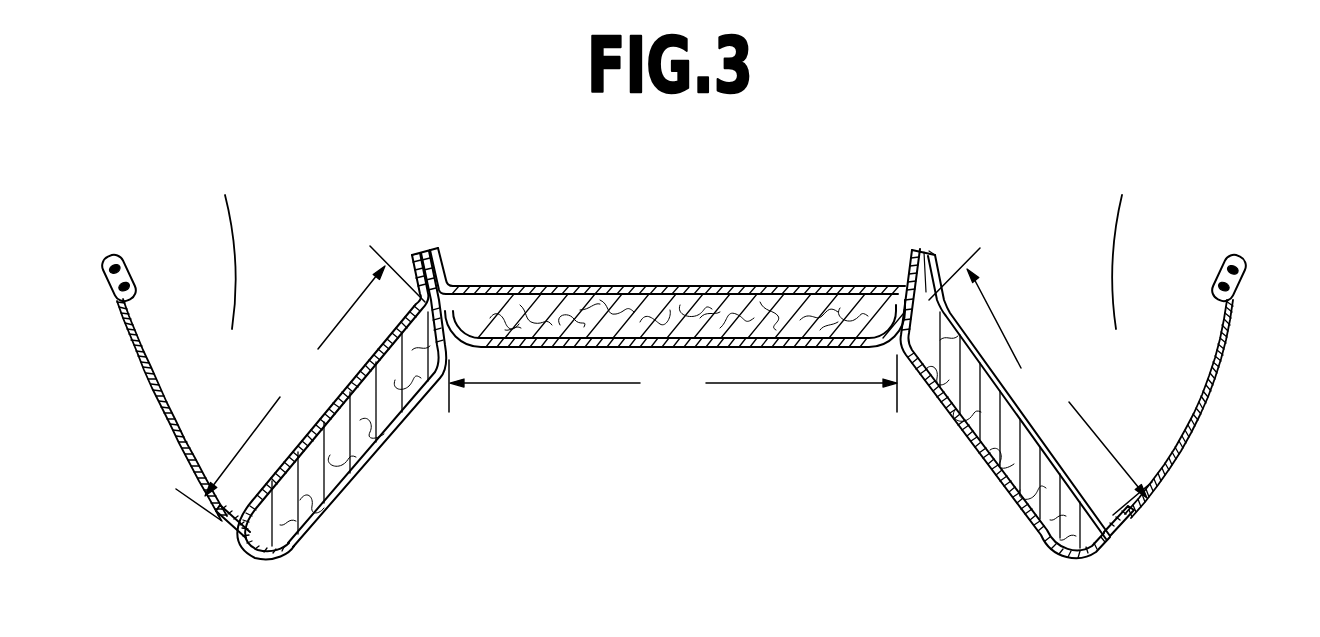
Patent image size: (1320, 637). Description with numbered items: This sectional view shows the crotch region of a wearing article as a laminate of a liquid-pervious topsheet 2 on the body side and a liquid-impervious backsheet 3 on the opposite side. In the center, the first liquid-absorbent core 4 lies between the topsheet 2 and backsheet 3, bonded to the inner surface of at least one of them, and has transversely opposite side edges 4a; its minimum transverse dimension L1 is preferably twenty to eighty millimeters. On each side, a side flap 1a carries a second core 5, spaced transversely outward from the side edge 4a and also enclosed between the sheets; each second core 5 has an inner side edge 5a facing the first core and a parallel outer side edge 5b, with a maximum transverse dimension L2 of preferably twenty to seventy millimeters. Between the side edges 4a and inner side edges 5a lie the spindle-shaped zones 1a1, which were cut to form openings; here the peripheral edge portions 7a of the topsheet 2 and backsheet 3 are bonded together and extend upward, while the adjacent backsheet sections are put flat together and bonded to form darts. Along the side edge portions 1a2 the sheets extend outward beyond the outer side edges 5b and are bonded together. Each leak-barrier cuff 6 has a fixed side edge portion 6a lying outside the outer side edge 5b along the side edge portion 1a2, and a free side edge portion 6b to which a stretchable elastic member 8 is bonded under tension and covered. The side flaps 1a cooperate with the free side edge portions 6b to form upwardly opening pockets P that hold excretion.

The topsheet 2 is at (980, 371).
The backsheet 3 is at (943, 419).
The first liquid-absorbent core 4 is at (727, 303).
The side edges of the first core 4a is at (880, 313).
The second liquid-absorbent core 5 is at (1035, 492).
The inner side edge of the second core 5a is at (920, 308).
The outer side edge of the second core 5b is at (1086, 552).
The side flap 1a is at (967, 457).
The spindle-shaped zone 1a1 is at (929, 252).
The side edge portion of the side flap 1a2 is at (1133, 518).
The leak-barrier cuff 6 is at (1193, 407).
The fixed side edge portion of the cuff 6a is at (1163, 477).
The free side edge portion of the cuff 6b is at (1222, 332).
The peripheral edge portion of the opening 7a is at (937, 262).
The elastic member 8 is at (1243, 280).
The pocket P is at (673, 245).
The minimum transverse dimension of the first core L1 is at (673, 383).
The maximum transverse dimension of the second core L2 is at (664, 383).